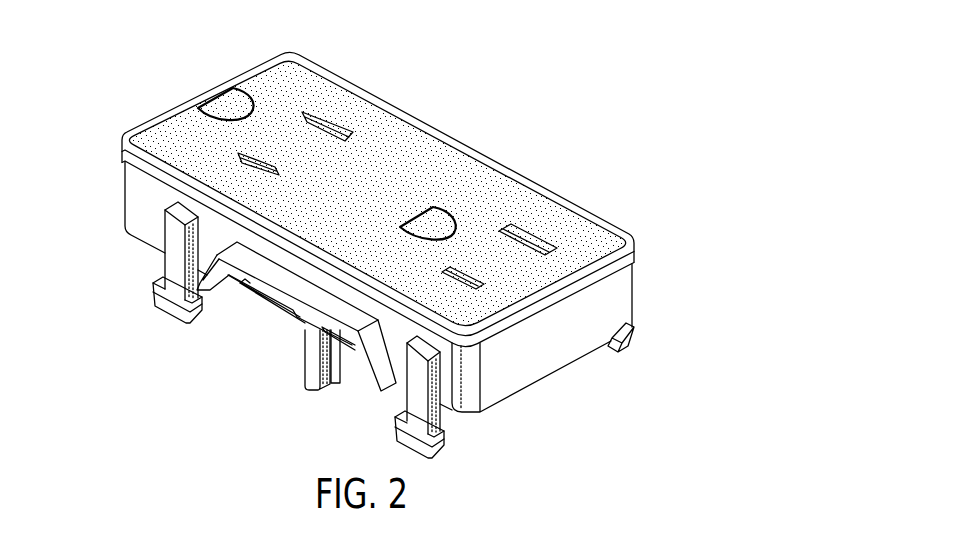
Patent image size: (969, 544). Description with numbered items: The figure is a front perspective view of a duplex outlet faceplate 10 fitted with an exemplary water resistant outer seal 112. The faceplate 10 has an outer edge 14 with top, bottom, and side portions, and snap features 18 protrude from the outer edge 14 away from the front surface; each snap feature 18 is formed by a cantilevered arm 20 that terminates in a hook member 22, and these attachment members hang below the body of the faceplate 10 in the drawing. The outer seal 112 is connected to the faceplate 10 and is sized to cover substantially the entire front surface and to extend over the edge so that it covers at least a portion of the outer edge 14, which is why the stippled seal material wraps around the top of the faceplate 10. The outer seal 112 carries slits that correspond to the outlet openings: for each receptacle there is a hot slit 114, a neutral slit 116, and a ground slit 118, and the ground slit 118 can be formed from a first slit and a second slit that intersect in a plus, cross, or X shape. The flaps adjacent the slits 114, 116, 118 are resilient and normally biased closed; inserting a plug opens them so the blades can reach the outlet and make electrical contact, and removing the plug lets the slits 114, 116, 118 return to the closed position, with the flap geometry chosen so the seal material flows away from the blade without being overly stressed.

The duplex outlet faceplate 10 is at (406, 235).
The outer edge 14 is at (140, 185).
The snap feature 18 is at (177, 313).
The cantilevered arm 20 is at (172, 236).
The hook member 22 is at (165, 302).
The water resistant outer seal 112 is at (431, 98).
The hot slit 114 is at (480, 284).
The neutral slit 116 is at (523, 238).
The ground slit 118 is at (438, 222).